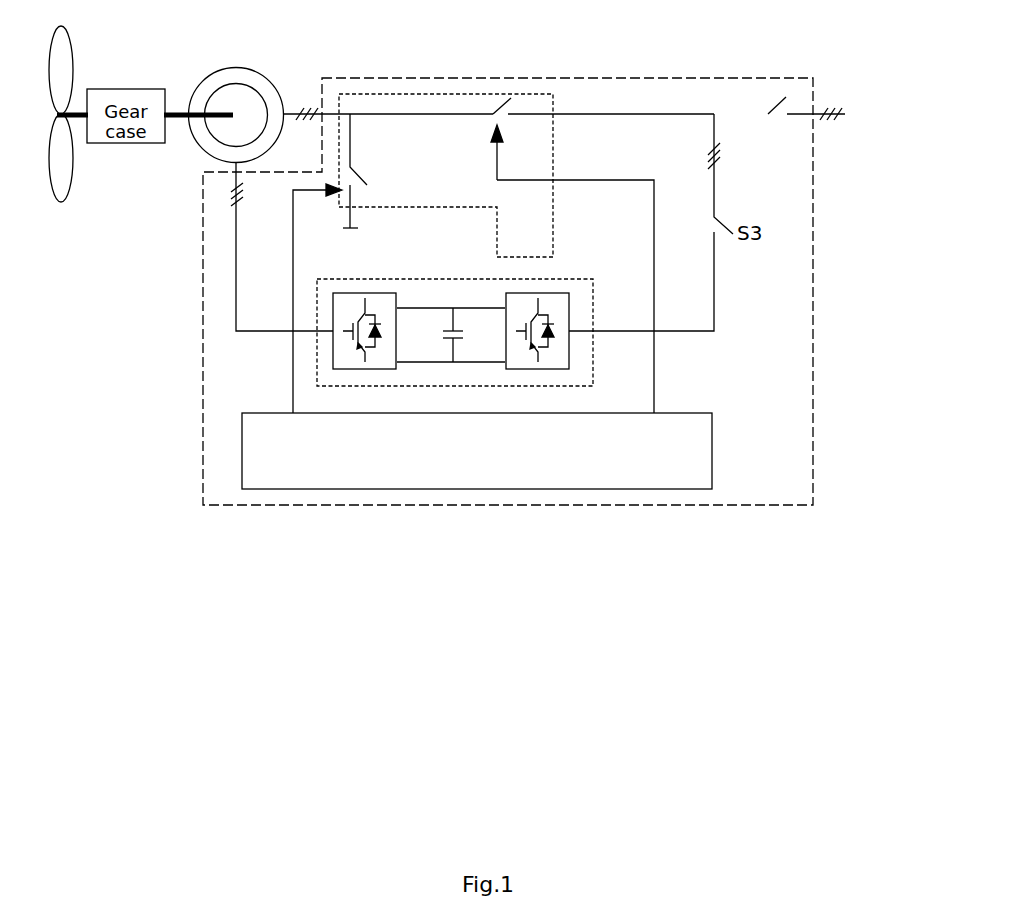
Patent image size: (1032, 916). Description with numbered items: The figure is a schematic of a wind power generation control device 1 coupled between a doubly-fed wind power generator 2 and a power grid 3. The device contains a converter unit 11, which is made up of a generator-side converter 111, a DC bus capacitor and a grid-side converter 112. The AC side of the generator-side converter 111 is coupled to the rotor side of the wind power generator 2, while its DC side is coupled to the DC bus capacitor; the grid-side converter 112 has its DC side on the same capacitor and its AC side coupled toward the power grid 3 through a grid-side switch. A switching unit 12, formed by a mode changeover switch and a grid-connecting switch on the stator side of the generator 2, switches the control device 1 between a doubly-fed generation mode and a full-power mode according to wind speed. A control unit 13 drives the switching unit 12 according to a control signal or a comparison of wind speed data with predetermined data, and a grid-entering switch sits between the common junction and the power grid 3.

The wind power generation control device 1 is at (638, 78).
The doubly-fed wind power generator 2 is at (279, 78).
The power grid 3 is at (838, 98).
The converter unit 11 is at (452, 326).
The switching unit 12 is at (407, 94).
The control unit 13 is at (712, 413).
The generator-side converter 111 is at (370, 371).
The grid-side converter 112 is at (532, 371).